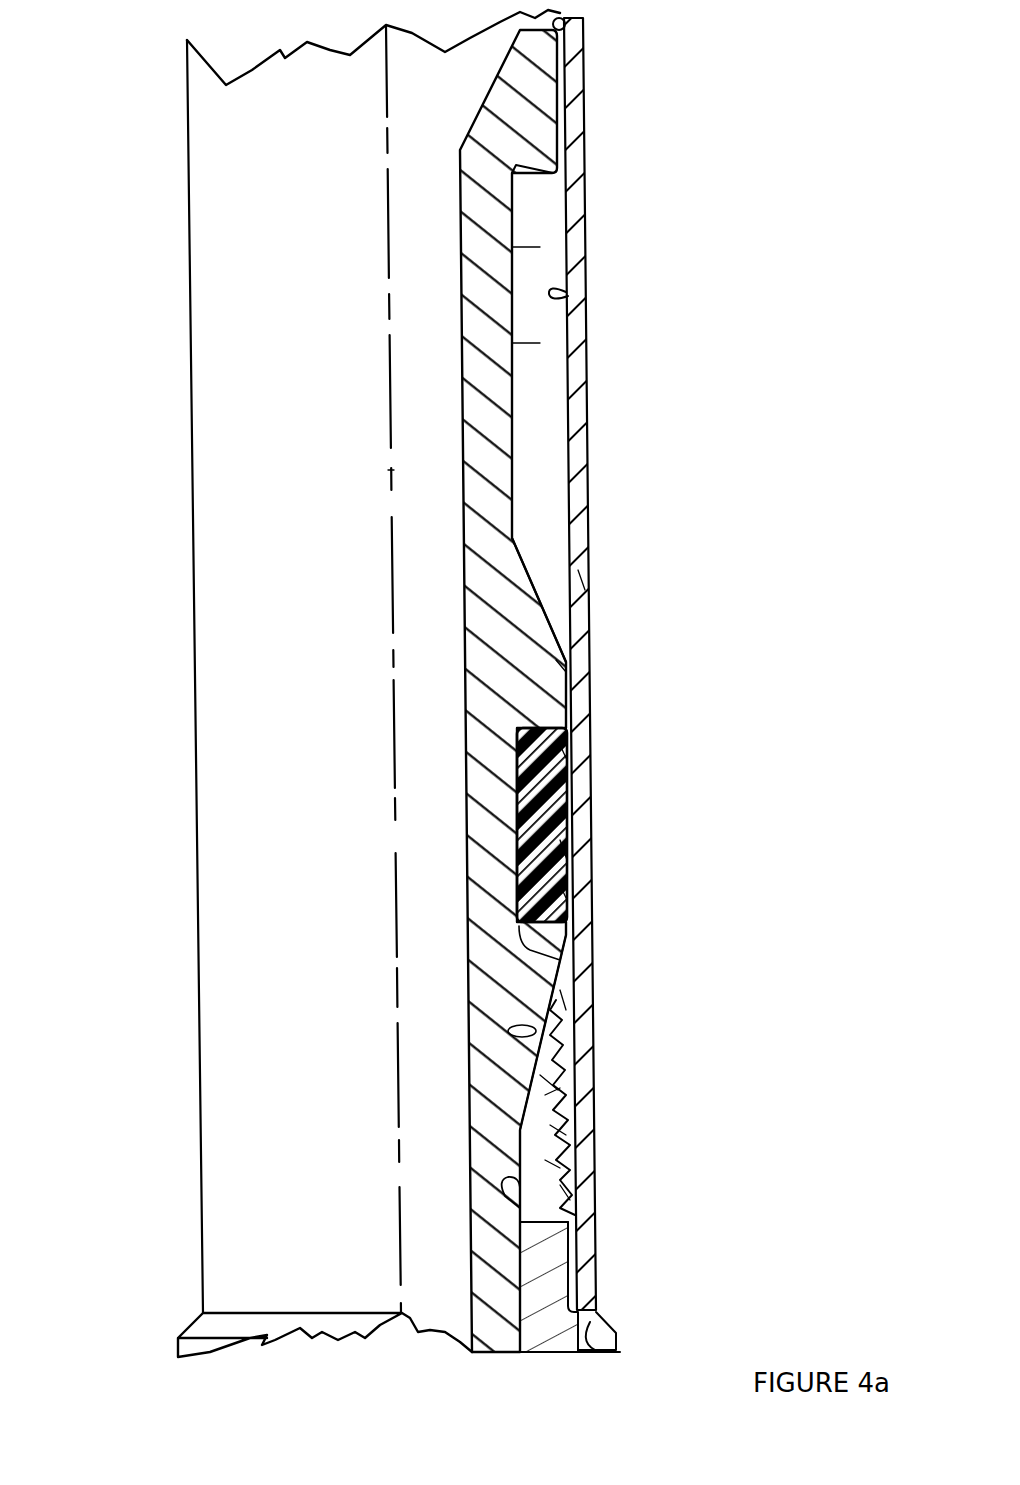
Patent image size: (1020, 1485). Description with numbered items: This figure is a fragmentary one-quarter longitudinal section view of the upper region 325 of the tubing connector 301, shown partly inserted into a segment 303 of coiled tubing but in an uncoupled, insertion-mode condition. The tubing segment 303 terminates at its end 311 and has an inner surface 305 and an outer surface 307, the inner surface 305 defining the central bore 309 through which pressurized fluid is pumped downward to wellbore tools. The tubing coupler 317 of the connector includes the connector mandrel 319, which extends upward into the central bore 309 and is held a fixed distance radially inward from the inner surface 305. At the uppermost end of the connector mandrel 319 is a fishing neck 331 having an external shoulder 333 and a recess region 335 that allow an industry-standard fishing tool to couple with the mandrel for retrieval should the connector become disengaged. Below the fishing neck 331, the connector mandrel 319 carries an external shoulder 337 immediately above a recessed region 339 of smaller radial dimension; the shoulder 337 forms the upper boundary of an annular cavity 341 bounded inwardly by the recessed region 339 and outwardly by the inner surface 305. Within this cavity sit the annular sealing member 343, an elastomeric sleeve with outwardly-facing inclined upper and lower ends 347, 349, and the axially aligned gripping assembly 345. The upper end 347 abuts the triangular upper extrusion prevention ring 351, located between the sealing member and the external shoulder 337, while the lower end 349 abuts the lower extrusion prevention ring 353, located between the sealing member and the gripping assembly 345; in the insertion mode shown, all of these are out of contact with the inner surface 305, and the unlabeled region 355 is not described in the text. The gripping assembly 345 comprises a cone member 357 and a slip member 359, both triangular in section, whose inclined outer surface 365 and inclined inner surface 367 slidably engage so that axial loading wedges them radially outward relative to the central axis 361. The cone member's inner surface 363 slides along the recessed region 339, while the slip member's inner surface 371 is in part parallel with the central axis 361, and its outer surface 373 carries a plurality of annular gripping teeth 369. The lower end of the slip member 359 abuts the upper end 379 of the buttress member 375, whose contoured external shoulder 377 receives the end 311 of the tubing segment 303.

The tubing connector 301 is at (662, 413).
The segment of coiled tubing 303 is at (578, 84).
The inner surface 305 is at (562, 296).
The outer surface 307 is at (579, 582).
The central bore 309 is at (590, 22).
The end 311 is at (600, 1311).
The tubing coupler 317 is at (698, 805).
The connector mandrel 319 is at (493, 553).
The upper region 325 is at (262, 747).
The fishing neck 331 is at (538, 247).
The external shoulder 333 is at (545, 150).
The recess region 335 is at (538, 345).
The external shoulder 337 is at (548, 668).
The recessed region 339 is at (568, 966).
The annular cavity 341 is at (565, 1020).
The annular sealing member 343 is at (565, 810).
The gripping assembly 345 is at (663, 1060).
The upper end 347 is at (568, 757).
The lower end 349 is at (568, 893).
The upper extrusion prevention ring 351 is at (568, 740).
The lower extrusion prevention ring 353 is at (568, 918).
The seal outer surface 355 is at (568, 850).
The cone member 357 is at (565, 1000).
The slip member 359 is at (565, 1190).
The central axis 361 is at (391, 490).
The inner surface 363 is at (565, 1040).
The inclined outer surface 365 is at (558, 1085).
The inclined inner surface 367 is at (560, 1086).
The annular gripping teeth 369 is at (552, 1162).
The inner surface 371 is at (545, 1240).
The outer surface 373 is at (560, 1130).
The buttress member 375 is at (575, 1295).
The external shoulder 377 is at (590, 1335).
The upper end 379 is at (545, 1262).